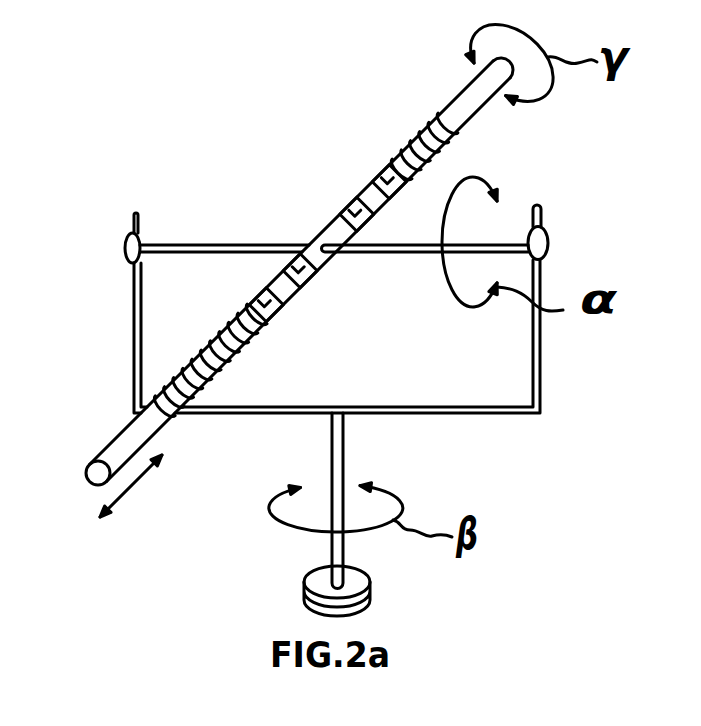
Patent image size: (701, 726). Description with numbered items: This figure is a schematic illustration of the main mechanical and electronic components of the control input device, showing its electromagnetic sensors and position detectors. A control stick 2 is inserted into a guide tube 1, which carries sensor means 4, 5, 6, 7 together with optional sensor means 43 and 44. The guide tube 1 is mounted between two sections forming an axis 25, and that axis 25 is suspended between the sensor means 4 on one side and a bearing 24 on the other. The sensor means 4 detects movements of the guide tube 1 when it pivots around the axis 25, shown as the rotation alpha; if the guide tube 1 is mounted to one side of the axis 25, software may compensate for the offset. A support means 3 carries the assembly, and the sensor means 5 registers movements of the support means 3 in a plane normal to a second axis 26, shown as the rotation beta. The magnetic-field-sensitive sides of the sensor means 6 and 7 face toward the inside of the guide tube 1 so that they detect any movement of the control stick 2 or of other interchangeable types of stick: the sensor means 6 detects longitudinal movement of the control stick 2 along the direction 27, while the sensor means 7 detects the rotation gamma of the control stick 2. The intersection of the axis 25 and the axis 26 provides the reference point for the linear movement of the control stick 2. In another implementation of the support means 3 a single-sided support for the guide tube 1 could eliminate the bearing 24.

The guide tube 1 is at (274, 280).
The control stick 2 is at (453, 101).
The support means 3 is at (497, 407).
The sensor means 4 is at (567, 221).
The sensor means 5 is at (311, 580).
The sensor means 6 is at (277, 319).
The sensor means 7 is at (391, 167).
The bearing 24 is at (126, 246).
The axis 25 is at (177, 245).
The axis 26 is at (344, 437).
The direction 27 is at (133, 483).
The optional sensor means 43 is at (311, 283).
The optional sensor means 44 is at (348, 204).